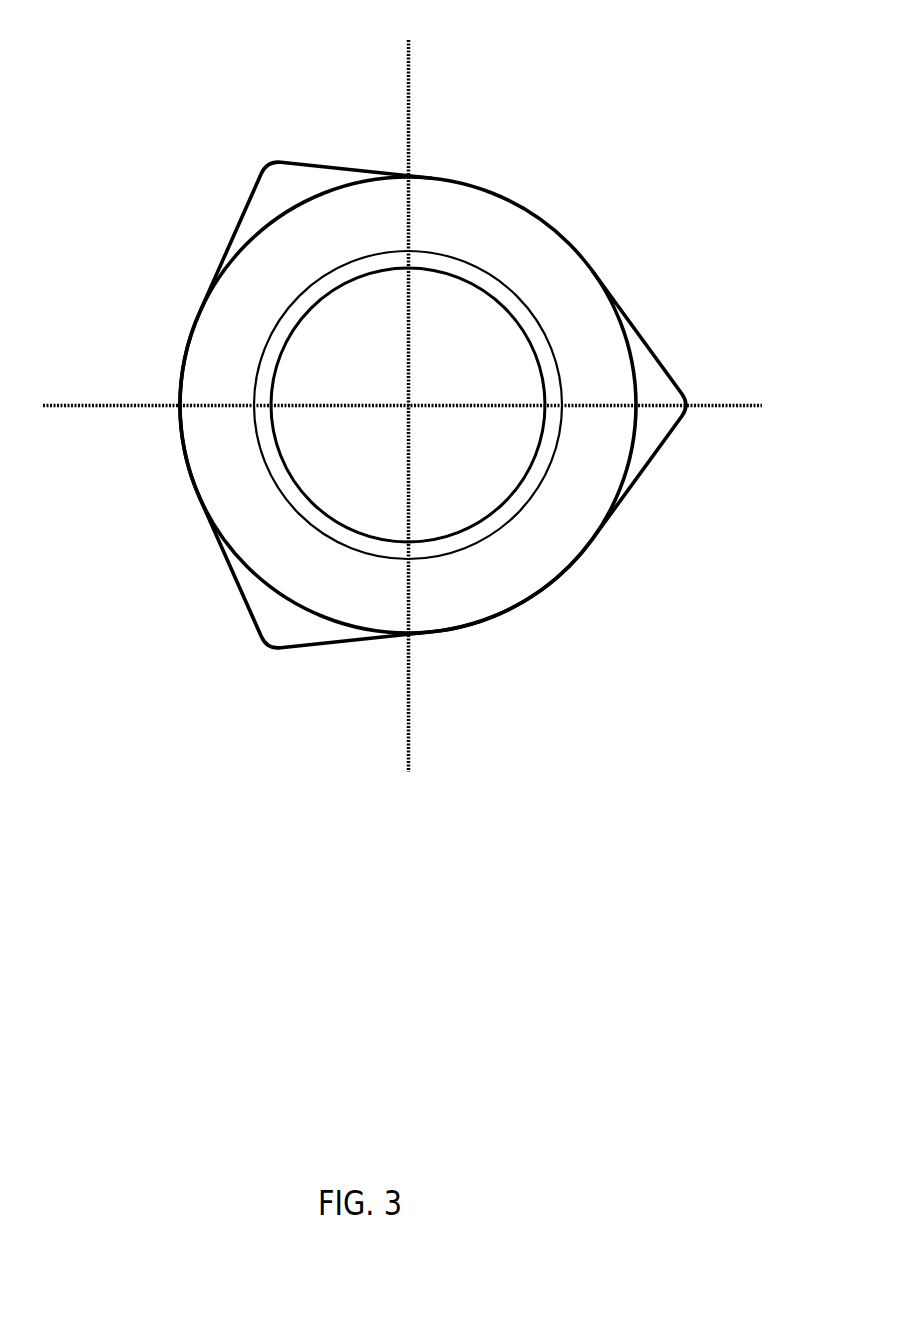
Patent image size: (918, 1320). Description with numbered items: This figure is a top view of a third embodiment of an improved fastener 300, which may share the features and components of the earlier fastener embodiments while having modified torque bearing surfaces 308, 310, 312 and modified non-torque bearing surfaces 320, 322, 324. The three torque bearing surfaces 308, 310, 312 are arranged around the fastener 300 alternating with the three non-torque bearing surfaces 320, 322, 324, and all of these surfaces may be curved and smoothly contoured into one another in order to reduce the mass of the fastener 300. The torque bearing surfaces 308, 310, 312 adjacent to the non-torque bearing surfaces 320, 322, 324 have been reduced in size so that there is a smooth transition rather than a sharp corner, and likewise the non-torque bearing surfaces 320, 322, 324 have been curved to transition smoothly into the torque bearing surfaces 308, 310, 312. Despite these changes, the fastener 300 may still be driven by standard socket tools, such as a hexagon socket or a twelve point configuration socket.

The fastener 300 is at (111, 86).
The torque bearing surface 308 is at (309, 151).
The torque bearing surface 310 is at (680, 365).
The torque bearing surface 312 is at (306, 664).
The non-torque bearing surface 320 is at (535, 192).
The non-torque bearing surface 322 is at (538, 616).
The non-torque bearing surface 324 is at (164, 370).